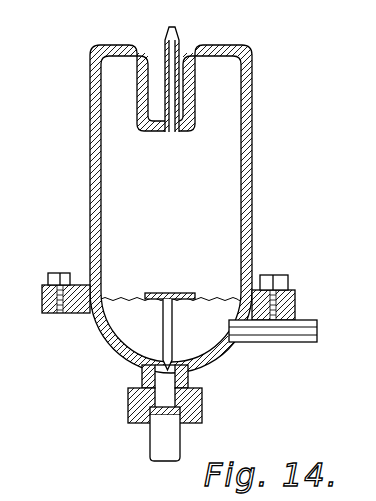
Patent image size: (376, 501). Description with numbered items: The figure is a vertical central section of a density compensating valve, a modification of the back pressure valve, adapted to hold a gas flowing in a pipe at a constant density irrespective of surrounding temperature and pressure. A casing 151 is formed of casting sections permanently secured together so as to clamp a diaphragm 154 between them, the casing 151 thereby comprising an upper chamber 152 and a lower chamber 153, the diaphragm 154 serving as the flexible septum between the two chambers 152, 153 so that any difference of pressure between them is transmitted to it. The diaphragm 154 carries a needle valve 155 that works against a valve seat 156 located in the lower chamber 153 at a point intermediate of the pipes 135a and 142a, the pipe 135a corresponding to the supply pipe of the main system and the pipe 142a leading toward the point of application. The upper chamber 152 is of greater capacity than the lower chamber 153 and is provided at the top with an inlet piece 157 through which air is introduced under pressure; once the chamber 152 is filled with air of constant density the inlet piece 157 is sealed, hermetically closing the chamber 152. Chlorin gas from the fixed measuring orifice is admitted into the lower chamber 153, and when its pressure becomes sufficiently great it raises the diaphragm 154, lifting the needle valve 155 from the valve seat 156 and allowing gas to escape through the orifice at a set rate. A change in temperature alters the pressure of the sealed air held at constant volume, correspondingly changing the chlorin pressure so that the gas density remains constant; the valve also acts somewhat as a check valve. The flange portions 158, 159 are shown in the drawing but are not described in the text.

The casing 151 is at (90, 243).
The upper chamber 152 is at (171, 238).
The lower chamber 153 is at (163, 333).
The diaphragm 154 is at (146, 294).
The needle valve 155 is at (141, 371).
The valve seat 156 is at (128, 392).
The inlet piece 157 is at (166, 42).
The pipe 142a is at (178, 444).
The pipe 135a is at (277, 344).
The left flange 158 is at (66, 293).
The right flange 159 is at (273, 297).